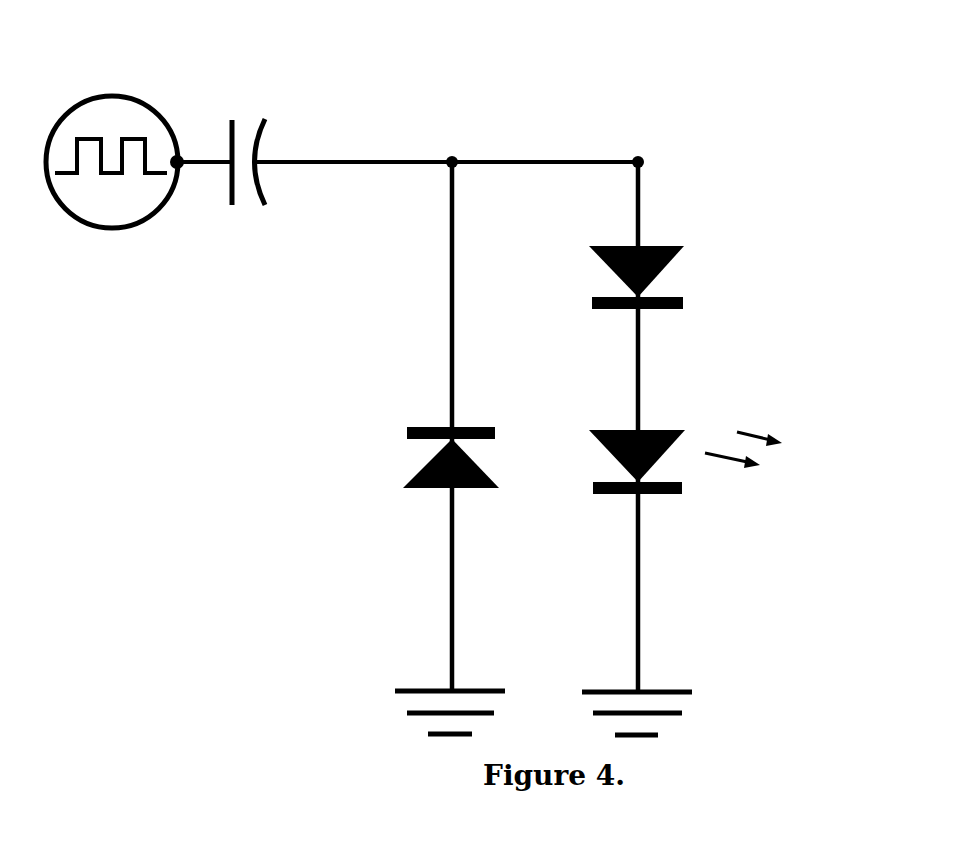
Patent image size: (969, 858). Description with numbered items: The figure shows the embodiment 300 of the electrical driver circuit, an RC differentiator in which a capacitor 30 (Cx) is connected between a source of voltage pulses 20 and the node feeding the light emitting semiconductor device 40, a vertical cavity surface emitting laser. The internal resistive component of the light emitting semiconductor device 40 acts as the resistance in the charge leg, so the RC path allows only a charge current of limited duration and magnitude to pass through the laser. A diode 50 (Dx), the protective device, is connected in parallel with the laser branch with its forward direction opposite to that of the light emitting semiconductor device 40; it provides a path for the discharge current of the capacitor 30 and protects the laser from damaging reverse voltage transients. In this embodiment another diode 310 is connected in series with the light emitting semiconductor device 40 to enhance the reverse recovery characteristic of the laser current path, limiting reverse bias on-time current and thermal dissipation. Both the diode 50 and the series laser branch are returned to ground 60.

The source of voltage pulses 20 is at (117, 77).
The capacitor 30 is at (257, 110).
The other diode 310 is at (677, 235).
The light emitting semiconductor device 40 is at (658, 425).
The diode 50 is at (415, 407).
The ground 60 is at (373, 670).
The embodiment of the driver circuit 300 is at (203, 427).